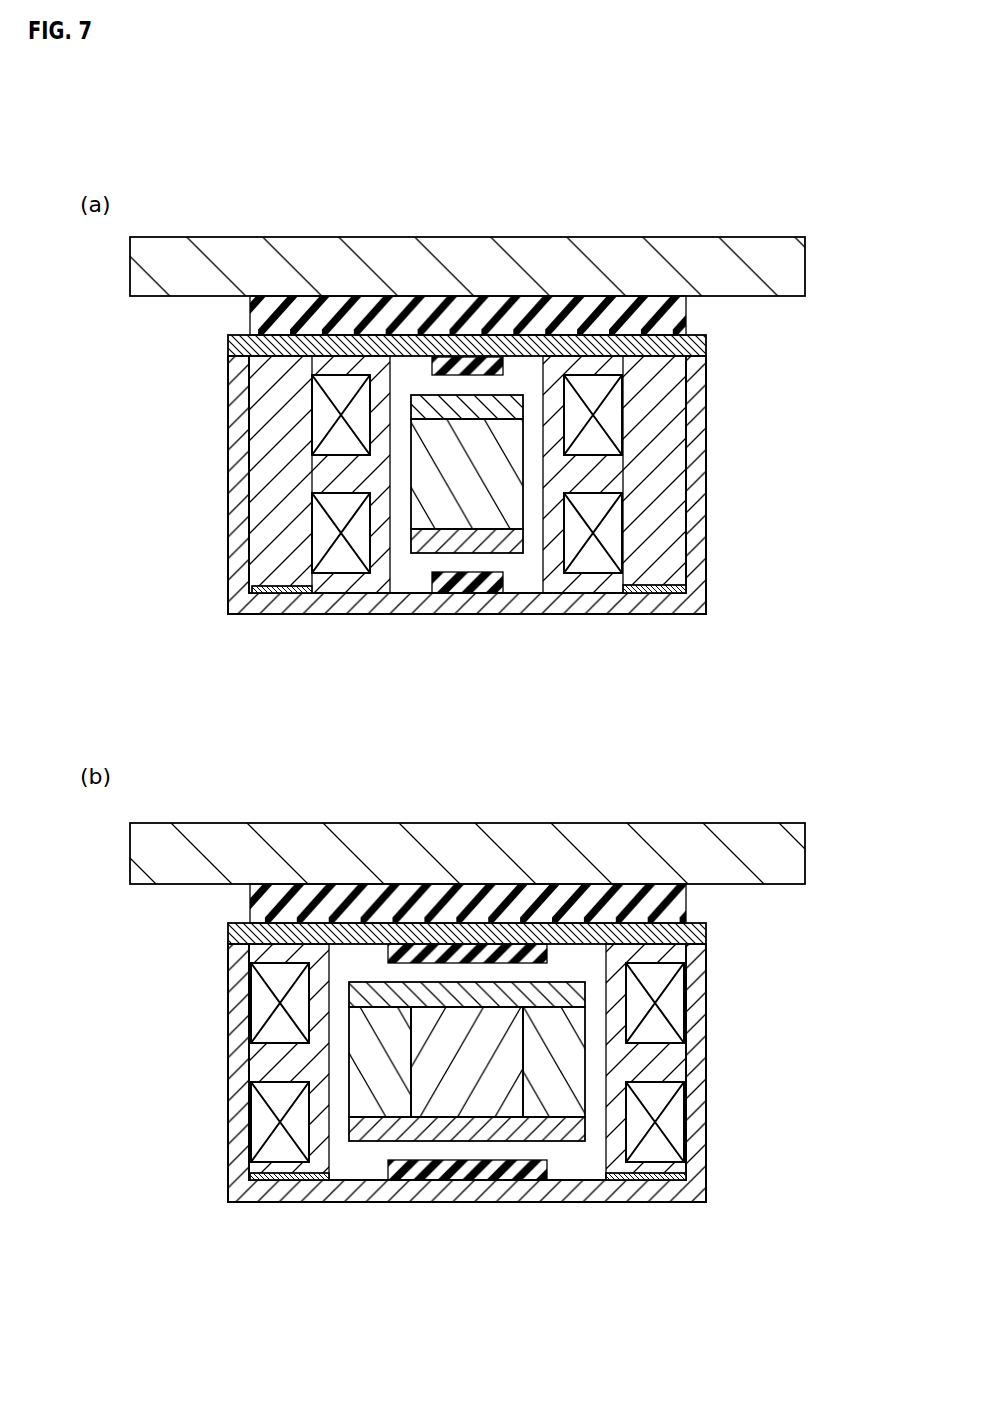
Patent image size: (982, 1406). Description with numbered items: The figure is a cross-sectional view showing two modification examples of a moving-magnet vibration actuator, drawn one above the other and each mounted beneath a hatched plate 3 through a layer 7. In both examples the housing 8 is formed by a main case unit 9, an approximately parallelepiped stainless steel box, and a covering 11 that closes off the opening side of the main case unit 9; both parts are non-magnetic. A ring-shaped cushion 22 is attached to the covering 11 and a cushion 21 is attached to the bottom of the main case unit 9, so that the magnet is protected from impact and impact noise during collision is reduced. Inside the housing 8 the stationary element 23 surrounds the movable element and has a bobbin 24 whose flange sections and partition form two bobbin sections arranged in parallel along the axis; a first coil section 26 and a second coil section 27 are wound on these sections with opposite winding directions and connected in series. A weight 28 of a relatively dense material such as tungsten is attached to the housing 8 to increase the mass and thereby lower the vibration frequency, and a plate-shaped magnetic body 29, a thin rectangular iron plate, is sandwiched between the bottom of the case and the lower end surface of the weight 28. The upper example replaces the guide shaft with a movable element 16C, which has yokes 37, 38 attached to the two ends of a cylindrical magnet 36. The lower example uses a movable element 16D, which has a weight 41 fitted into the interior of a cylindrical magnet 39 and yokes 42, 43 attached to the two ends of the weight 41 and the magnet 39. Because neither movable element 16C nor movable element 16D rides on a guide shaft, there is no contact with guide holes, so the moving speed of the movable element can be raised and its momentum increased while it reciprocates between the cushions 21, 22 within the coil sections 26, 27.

The base plate 3 is at (632, 262).
The damping layer 7 is at (252, 317).
The housing 8 is at (417, 767).
The main case unit 9 is at (240, 425).
The covering 11 is at (228, 343).
The movable element 16C is at (310, 479).
The movable element 16D is at (341, 1085).
The cushion 21 is at (468, 590).
The cushion 22 is at (463, 362).
The stationary element 23 is at (681, 768).
The bobbin 24 is at (625, 475).
The first coil section 26 is at (669, 827).
The second coil section 27 is at (612, 402).
The weight 28 is at (690, 378).
The plate-shaped magnetic body 29 is at (281, 595).
The cylindrical magnet 36 is at (432, 473).
The yoke 37 is at (410, 538).
The yoke 38 is at (410, 407).
The cylindrical magnet 39 is at (362, 1035).
The weight 41 is at (437, 1062).
The yoke 42 is at (357, 1127).
The yoke 43 is at (350, 993).